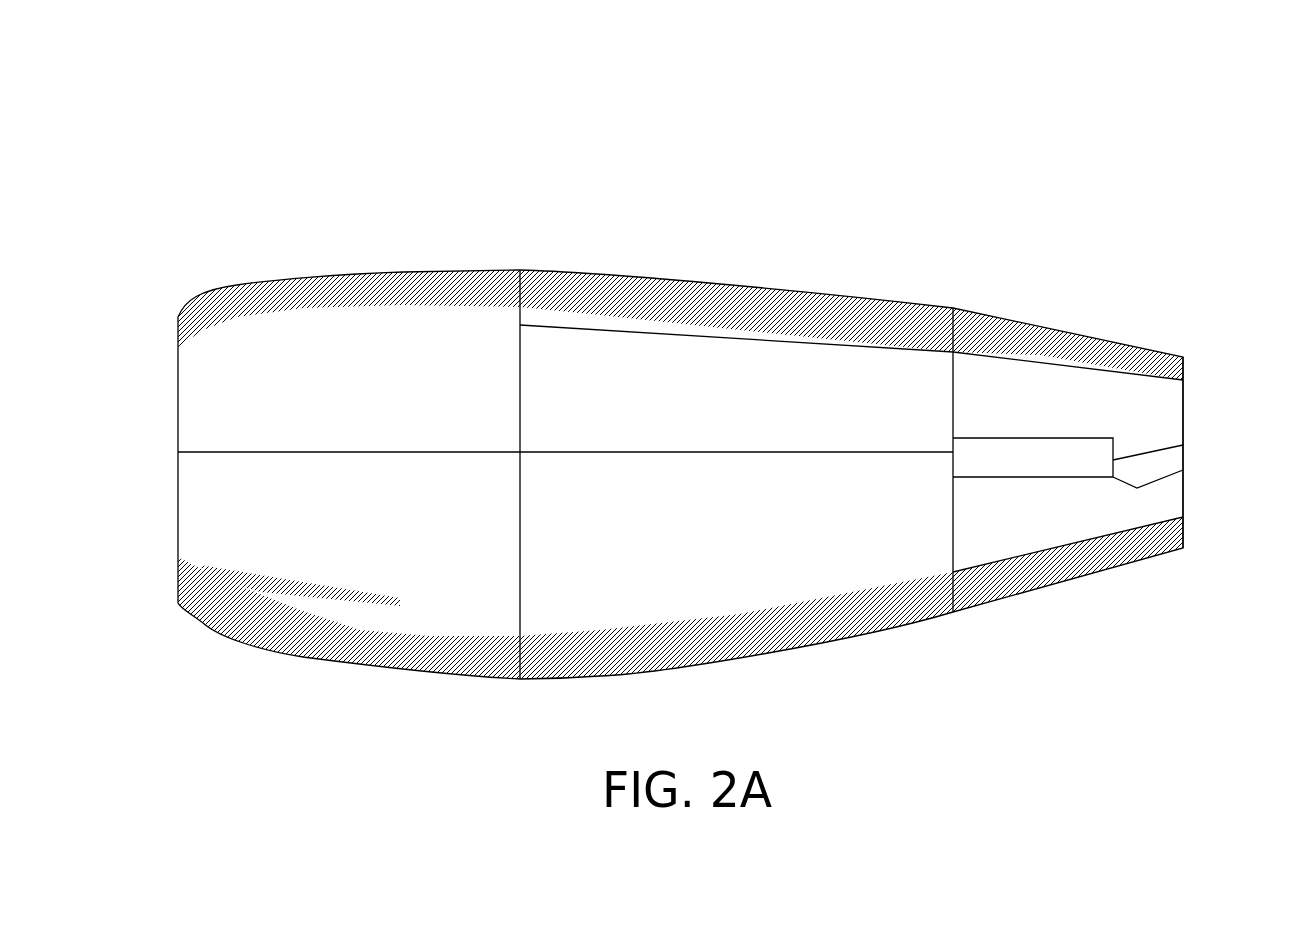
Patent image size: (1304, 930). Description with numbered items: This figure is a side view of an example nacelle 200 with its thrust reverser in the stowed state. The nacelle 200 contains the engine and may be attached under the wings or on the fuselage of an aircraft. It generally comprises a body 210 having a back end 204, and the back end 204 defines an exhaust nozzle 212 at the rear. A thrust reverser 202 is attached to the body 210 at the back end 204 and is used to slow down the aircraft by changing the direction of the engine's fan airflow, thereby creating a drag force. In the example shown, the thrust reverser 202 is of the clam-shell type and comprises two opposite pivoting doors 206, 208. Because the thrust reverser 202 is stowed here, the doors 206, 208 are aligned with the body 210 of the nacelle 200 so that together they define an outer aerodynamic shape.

The nacelle 200 is at (268, 127).
The thrust reverser 202 is at (1050, 620).
The back end 204 is at (1183, 268).
The pivoting door 206 is at (1066, 392).
The pivoting door 208 is at (1092, 520).
The body 210 is at (551, 272).
The exhaust nozzle 212 is at (1178, 421).